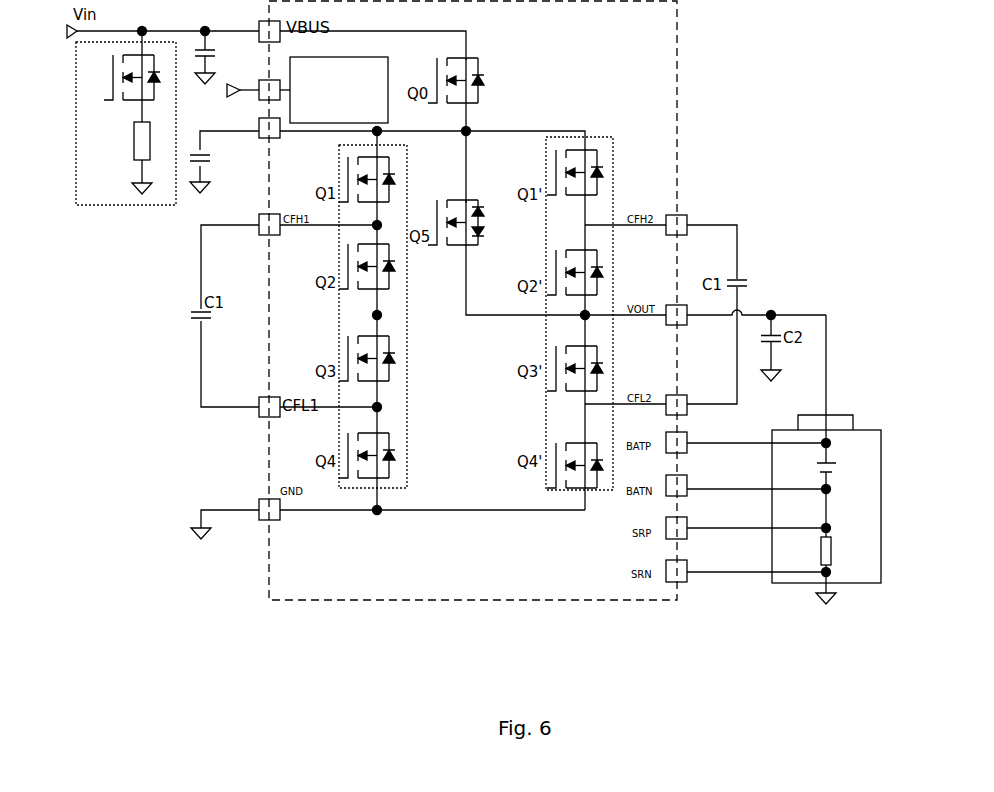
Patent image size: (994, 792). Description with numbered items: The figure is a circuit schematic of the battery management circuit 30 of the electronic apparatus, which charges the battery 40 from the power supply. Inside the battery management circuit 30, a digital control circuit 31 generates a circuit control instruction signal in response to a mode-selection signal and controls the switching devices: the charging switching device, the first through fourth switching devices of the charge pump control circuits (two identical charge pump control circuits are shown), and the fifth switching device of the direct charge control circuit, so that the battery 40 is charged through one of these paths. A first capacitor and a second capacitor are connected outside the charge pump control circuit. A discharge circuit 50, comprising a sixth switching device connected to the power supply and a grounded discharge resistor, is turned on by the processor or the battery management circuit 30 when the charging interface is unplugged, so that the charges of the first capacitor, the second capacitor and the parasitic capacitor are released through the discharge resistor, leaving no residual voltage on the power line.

The battery management circuit 30 is at (473, 300).
The digital control circuit 31 is at (334, 90).
The battery 40 is at (826, 459).
The discharge circuit 50 is at (140, 207).